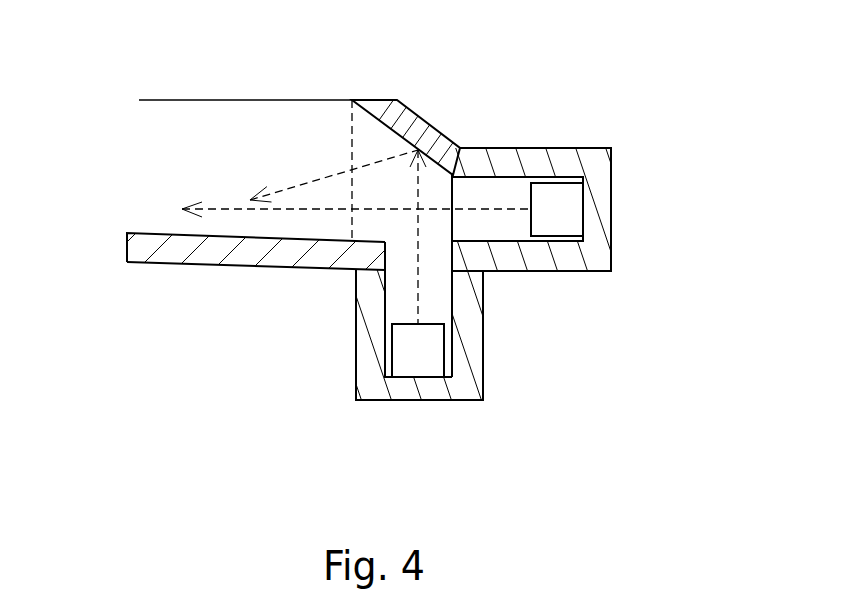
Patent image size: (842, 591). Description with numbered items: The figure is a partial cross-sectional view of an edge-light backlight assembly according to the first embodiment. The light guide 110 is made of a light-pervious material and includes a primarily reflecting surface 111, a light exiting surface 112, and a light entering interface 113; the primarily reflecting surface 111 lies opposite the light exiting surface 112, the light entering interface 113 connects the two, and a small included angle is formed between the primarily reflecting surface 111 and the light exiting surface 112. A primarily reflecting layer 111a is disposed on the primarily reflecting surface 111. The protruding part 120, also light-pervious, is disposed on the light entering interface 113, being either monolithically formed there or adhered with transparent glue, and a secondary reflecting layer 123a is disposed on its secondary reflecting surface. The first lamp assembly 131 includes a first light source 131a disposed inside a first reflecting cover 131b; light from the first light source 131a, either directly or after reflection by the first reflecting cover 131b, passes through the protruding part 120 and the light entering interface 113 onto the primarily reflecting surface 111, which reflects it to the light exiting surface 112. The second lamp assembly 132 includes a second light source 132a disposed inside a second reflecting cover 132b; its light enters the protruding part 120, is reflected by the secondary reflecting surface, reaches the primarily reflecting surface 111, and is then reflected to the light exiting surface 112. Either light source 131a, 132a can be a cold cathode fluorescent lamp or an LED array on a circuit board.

The light guide 110 is at (228, 127).
The primarily reflecting surface 111 is at (162, 233).
The primarily reflecting layer 111a is at (287, 270).
The light exiting surface 112 is at (178, 100).
The light entering interface 113 is at (352, 118).
The protruding part 120 is at (378, 173).
The secondary reflecting layer 123a is at (420, 117).
The first lamp assembly 131 is at (598, 135).
The first light source 131a is at (553, 213).
The first reflecting cover 131b is at (612, 227).
The second lamp assembly 132 is at (418, 413).
The second light source 132a is at (422, 352).
The second reflecting cover 132b is at (460, 400).